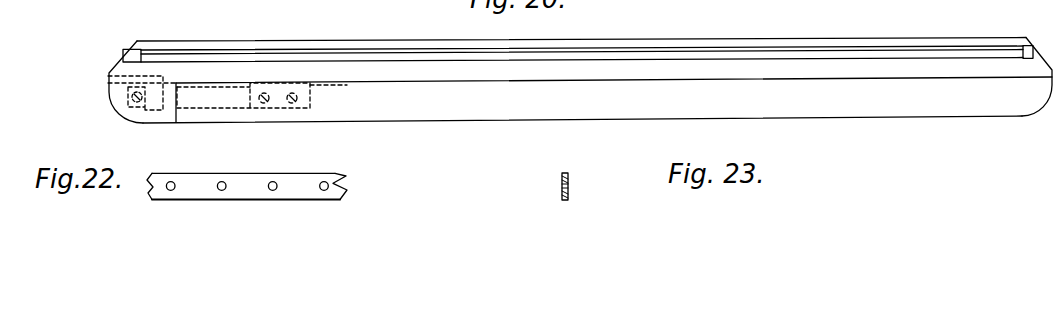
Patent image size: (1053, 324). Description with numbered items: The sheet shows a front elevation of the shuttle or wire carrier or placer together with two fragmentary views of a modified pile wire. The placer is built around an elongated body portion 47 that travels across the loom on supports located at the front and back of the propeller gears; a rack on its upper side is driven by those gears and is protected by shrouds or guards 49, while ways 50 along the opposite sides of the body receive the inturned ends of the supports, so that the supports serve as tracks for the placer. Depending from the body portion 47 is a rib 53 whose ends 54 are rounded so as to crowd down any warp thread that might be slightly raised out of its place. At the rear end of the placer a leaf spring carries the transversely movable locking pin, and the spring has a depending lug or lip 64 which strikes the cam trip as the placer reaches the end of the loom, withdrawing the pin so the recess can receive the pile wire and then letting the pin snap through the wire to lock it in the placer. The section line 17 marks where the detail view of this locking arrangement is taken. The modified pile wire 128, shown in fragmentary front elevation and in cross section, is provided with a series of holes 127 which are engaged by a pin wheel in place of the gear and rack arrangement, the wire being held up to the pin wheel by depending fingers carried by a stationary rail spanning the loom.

In FIG. 20, the section line 17 is at (108, 84).
In FIG. 20, the body portion 47 is at (670, 66).
In FIG. 20, the shrouds or guards 49 is at (742, 11).
In FIG. 20, the ways 50 is at (858, 55).
In FIG. 20, the rib 53 is at (810, 103).
In FIG. 20, the rounded ends 54 is at (116, 111).
In FIG. 20, the depending lug or lip 64 is at (143, 122).
In FIG. 22, the holes 127 is at (222, 186).
In FIG. 23, the holes 127 is at (560, 188).
In FIG. 22, the pile wire 128 is at (335, 179).
In FIG. 23, the pile wire 128 is at (567, 173).